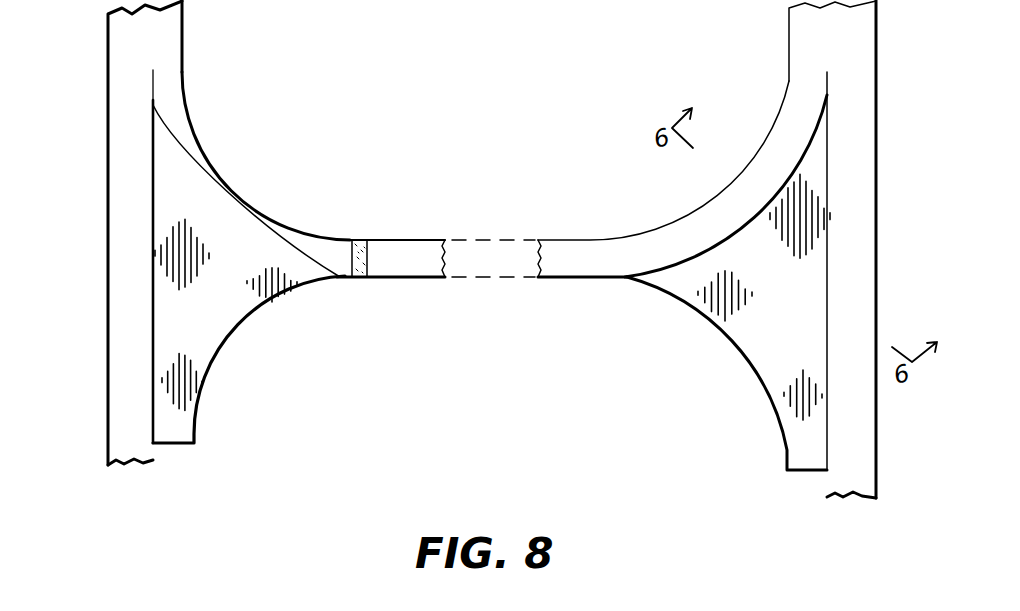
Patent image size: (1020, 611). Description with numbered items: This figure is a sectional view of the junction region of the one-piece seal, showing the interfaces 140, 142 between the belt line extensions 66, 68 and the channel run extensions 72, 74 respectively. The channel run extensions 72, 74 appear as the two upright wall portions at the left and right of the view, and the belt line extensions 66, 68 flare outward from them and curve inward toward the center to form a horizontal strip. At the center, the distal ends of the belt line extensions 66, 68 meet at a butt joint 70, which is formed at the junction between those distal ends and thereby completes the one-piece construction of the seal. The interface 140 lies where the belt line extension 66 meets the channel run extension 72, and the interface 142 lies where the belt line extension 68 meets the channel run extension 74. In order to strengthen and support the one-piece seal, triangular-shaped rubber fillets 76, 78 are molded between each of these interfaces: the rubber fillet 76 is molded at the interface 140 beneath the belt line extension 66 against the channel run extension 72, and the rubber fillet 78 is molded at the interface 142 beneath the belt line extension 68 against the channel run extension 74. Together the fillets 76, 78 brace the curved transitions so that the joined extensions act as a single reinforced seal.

The belt line extension 66 is at (223, 182).
The belt line extension 68 is at (733, 211).
The butt joint 70 is at (358, 240).
The channel run extension 72 is at (115, 356).
The channel run extension 74 is at (872, 451).
The triangular-shaped rubber fillet 76 is at (204, 362).
The triangular-shaped rubber fillet 78 is at (790, 415).
The interface 140 is at (277, 319).
The interface 142 is at (696, 322).